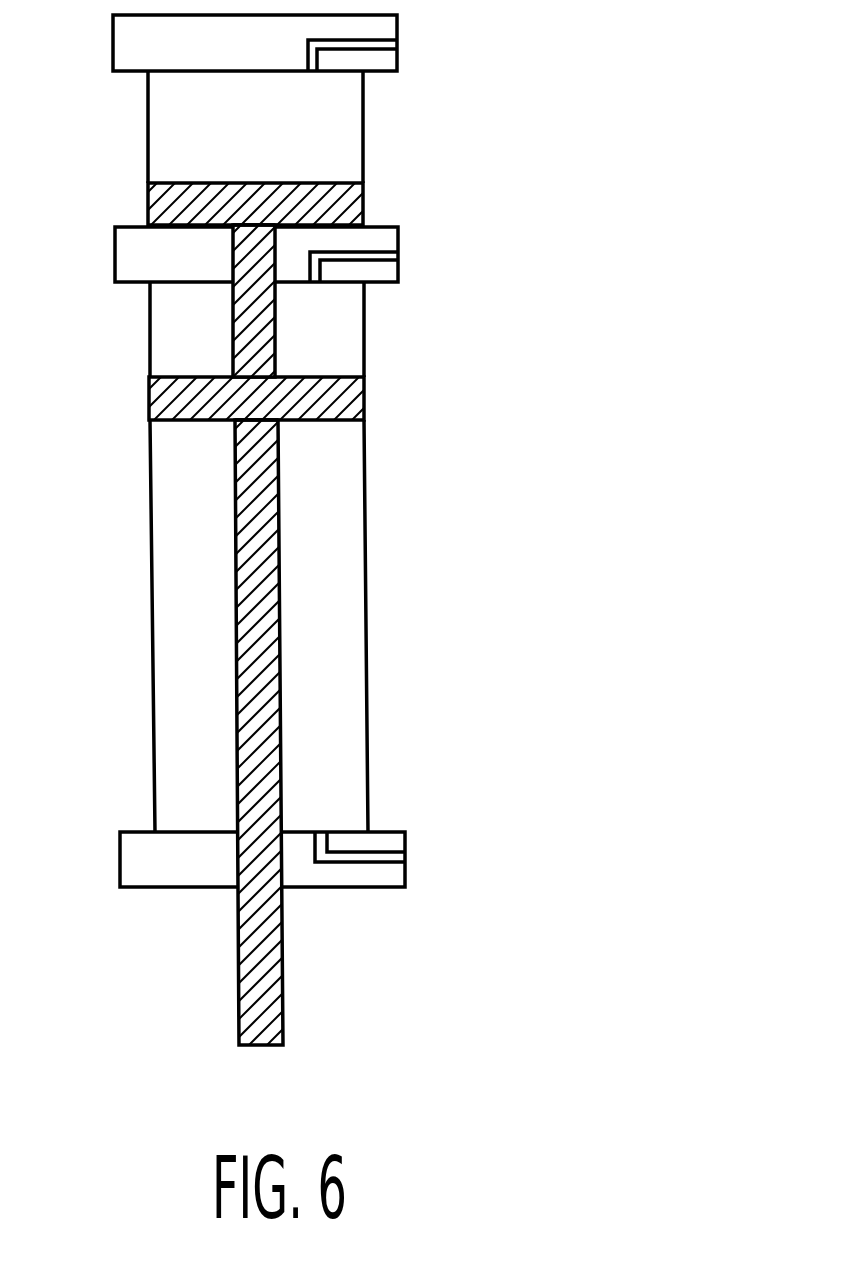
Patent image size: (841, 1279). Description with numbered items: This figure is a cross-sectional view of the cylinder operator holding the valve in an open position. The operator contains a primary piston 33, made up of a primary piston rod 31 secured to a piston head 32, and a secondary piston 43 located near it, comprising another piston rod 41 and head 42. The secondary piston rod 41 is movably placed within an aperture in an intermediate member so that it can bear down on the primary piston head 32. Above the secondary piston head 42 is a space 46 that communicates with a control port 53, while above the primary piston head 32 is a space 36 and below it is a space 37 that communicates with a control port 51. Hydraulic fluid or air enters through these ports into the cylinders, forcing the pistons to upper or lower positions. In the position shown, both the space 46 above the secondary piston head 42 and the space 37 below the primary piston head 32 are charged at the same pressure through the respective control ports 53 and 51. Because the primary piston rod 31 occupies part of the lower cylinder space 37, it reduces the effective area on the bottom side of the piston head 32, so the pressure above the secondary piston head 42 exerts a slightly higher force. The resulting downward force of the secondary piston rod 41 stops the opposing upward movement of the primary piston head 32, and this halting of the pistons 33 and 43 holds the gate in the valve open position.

The primary piston rod 31 is at (272, 571).
The piston head 32 is at (185, 400).
The primary piston 33 is at (272, 422).
The space above the primary piston head 36 is at (175, 333).
The space below the primary piston head 37 is at (180, 650).
The piston rod 41 is at (260, 328).
The head 42 is at (262, 196).
The secondary piston 43 is at (258, 225).
The space above the secondary piston head 46 is at (170, 125).
The control port 51 is at (398, 255).
The control port 53 is at (397, 44).